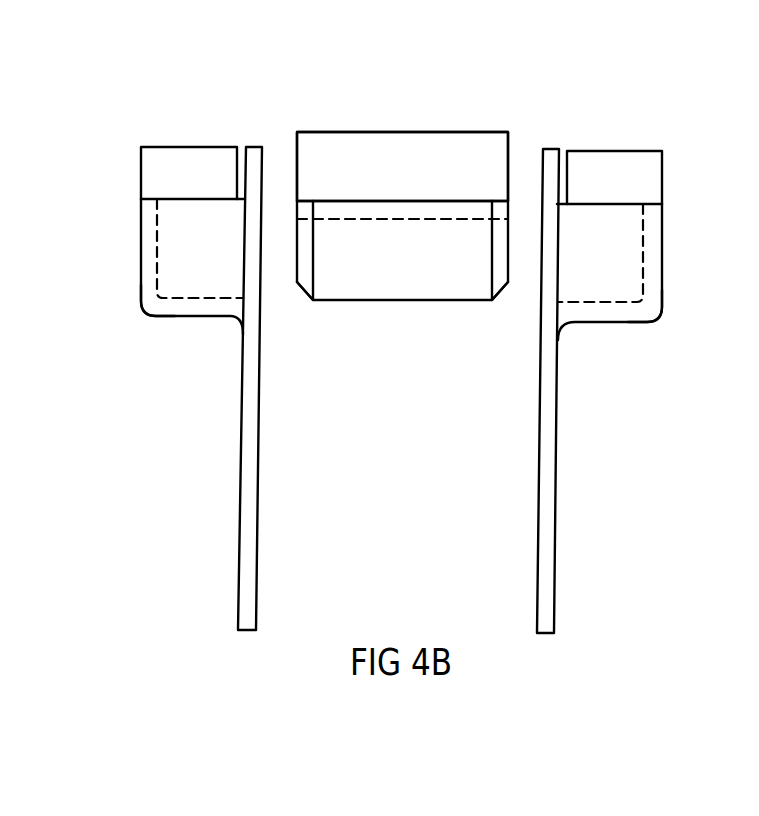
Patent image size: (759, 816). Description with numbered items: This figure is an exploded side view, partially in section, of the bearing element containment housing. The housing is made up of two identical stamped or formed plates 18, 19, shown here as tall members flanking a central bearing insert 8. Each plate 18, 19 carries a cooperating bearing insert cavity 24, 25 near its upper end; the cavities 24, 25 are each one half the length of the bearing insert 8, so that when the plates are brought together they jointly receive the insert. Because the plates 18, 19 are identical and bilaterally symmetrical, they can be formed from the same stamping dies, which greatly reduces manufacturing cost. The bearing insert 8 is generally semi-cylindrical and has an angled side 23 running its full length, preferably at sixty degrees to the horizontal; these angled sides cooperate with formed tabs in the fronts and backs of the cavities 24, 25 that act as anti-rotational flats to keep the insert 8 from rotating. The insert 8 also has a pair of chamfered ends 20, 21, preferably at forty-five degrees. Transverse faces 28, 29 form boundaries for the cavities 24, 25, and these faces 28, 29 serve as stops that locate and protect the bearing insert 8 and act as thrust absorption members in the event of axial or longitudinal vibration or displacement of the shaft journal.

The bearing insert 8 is at (447, 230).
The angled side 23 is at (427, 153).
The chamfered end 20 is at (303, 270).
The chamfered end 21 is at (498, 270).
The bearing insert cavity 24 is at (180, 233).
The bearing insert cavity 25 is at (609, 243).
The transverse face 28 is at (138, 287).
The transverse face 29 is at (662, 292).
The plate 18 is at (242, 467).
The plate 19 is at (558, 453).